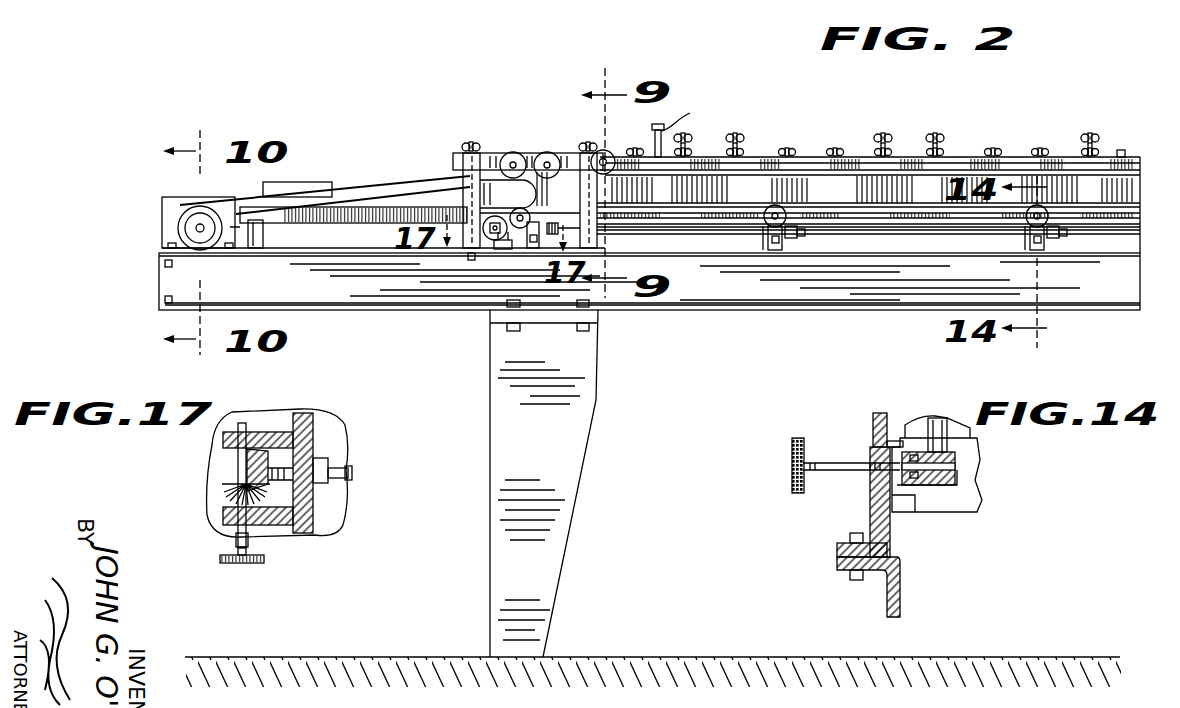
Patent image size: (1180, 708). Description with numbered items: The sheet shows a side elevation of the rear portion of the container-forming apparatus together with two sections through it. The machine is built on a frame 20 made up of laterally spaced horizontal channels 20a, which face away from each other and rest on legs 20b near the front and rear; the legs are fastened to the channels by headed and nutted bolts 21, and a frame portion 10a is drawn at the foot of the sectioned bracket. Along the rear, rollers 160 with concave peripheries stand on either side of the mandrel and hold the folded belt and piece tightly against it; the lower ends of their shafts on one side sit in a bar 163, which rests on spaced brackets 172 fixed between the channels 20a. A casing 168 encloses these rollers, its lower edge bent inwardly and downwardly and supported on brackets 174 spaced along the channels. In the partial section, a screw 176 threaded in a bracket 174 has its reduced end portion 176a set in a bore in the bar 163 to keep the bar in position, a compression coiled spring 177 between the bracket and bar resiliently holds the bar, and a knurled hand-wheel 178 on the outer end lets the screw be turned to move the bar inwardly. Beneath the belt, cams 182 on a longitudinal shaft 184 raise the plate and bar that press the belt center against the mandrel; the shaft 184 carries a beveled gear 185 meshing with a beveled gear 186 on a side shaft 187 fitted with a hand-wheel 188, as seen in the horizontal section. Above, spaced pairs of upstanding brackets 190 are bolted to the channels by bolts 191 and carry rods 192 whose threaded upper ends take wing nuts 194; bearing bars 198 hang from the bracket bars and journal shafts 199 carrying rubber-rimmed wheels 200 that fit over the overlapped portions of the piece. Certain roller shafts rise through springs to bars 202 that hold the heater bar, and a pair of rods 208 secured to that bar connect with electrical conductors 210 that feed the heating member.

In FIG. 14, the frame flange 10a is at (888, 598).
In FIG. 2, the frame 20 is at (742, 313).
In FIG. 2, the channels 20a is at (904, 303).
In FIG. 2, the legs 20b is at (597, 398).
In FIG. 2, the headed and nutted bolts 21 is at (576, 330).
In FIG. 14, the rollers 160 is at (930, 422).
In FIG. 14, the bar 163 is at (960, 512).
In FIG. 14, the casing 168 is at (876, 417).
In FIG. 2, the brackets 172 is at (775, 252).
In FIG. 14, the brackets 172 is at (970, 487).
In FIG. 2, the brackets 174 is at (496, 251).
In FIG. 14, the brackets 174 is at (870, 520).
In FIG. 14, the screws 176 is at (832, 462).
In FIG. 14, the reduced end portions 176a is at (958, 454).
In FIG. 14, the compression coiled springs 177 is at (922, 512).
In FIG. 2, the hand-wheels 178 is at (778, 210).
In FIG. 14, the hand-wheels 178 is at (790, 466).
In FIG. 2, the cams 182 is at (529, 249).
In FIG. 17, the cams 182 is at (322, 460).
In FIG. 2, the shaft 184 is at (856, 229).
In FIG. 17, the shaft 184 is at (306, 488).
In FIG. 17, the beveled gear 185 is at (244, 462).
In FIG. 17, the beveled gear 186 is at (226, 490).
In FIG. 2, the shaft 187 is at (496, 246).
In FIG. 17, the shaft 187 is at (234, 538).
In FIG. 2, the hand-wheel 188 is at (487, 250).
In FIG. 17, the hand-wheel 188 is at (256, 565).
In FIG. 2, the upstanding brackets 190 is at (463, 177).
In FIG. 2, the bolts 191 is at (592, 257).
In FIG. 2, the rods 192 is at (478, 153).
In FIG. 2, the wing nuts 194 is at (470, 144).
In FIG. 2, the bearing bars 198 is at (530, 157).
In FIG. 2, the shafts 199 is at (550, 170).
In FIG. 2, the wheels 200 is at (601, 150).
In FIG. 2, the bars 202 is at (736, 146).
In FIG. 2, the rods 208 is at (654, 136).
In FIG. 2, the electrical conductors 210 is at (690, 113).